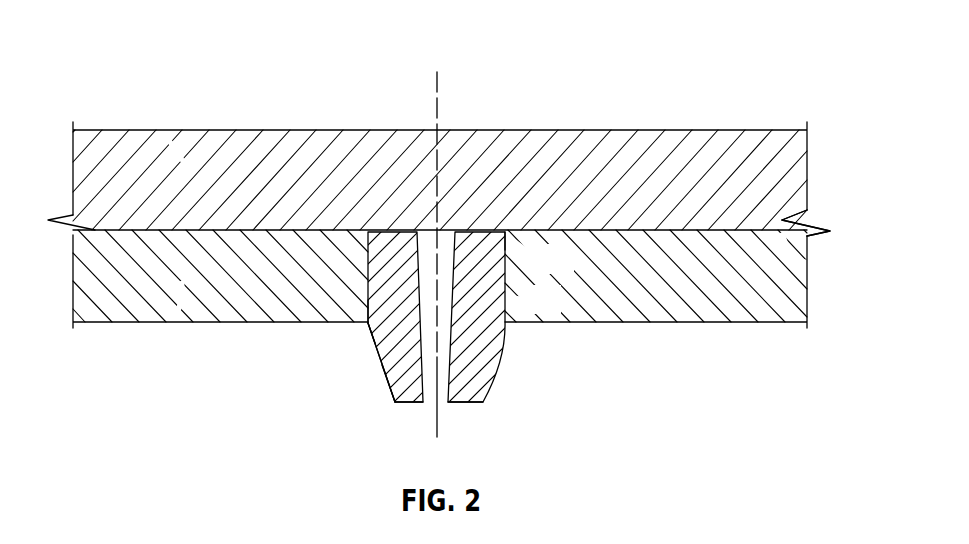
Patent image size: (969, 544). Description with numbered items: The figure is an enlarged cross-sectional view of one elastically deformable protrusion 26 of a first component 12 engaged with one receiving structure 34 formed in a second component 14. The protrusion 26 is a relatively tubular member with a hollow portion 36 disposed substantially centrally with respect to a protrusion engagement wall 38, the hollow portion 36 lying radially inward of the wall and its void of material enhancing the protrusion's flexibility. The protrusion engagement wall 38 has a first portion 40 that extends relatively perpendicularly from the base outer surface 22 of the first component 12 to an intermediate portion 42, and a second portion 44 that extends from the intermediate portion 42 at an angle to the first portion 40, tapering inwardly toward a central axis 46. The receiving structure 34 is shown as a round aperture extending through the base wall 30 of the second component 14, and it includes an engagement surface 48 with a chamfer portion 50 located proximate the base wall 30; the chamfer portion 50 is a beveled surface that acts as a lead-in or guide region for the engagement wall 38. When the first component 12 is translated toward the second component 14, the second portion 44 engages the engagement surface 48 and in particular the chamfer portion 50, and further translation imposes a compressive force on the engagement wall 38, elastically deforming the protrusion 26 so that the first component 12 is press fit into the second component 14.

The first component 12 is at (182, 160).
The second component 14 is at (182, 283).
The base outer surface 22 is at (782, 236).
The elastically deformable protrusion 26 is at (467, 413).
The base wall 30 is at (768, 213).
The receiving structure 34 is at (377, 275).
The hollow portion 36 is at (432, 358).
The protrusion engagement wall 38 is at (366, 344).
The first portion 40 is at (367, 332).
The intermediate portion 42 is at (369, 353).
The second portion 44 is at (388, 383).
The central axis 46 is at (437, 108).
The engagement surface 48 is at (499, 297).
The chamfer portion 50 is at (508, 238).